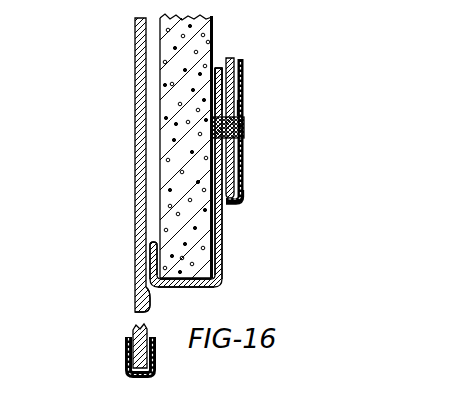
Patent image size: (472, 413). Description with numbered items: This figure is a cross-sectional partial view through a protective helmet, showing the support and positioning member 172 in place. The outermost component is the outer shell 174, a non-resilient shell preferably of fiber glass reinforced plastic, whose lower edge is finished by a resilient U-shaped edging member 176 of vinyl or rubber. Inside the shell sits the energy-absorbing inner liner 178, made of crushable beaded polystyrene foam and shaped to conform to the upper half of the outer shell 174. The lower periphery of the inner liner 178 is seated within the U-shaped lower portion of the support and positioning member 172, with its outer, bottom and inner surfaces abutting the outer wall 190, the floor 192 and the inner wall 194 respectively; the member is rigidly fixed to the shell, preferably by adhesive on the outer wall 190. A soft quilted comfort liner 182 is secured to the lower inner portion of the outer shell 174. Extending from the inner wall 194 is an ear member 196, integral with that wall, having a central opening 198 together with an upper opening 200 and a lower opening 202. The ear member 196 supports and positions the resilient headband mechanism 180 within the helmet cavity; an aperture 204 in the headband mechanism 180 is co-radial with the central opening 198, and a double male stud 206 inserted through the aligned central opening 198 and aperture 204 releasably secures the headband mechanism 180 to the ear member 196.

The support and positioning member 172 is at (224, 286).
The outer shell 174 is at (134, 80).
The U-shaped edging member 176 is at (126, 347).
The energy-absorbing inner liner 178 is at (163, 167).
The headband mechanism 180 is at (234, 57).
The comfort liner 182 is at (136, 296).
The outer wall 190 is at (157, 252).
The floor 192 is at (198, 289).
The inner wall 194 is at (219, 266).
The ear member 196 is at (217, 66).
The central opening 198 is at (238, 150).
The upper opening 200 is at (233, 92).
The lower opening 202 is at (250, 167).
The aperture 204 is at (243, 109).
The double male stud 206 is at (253, 127).